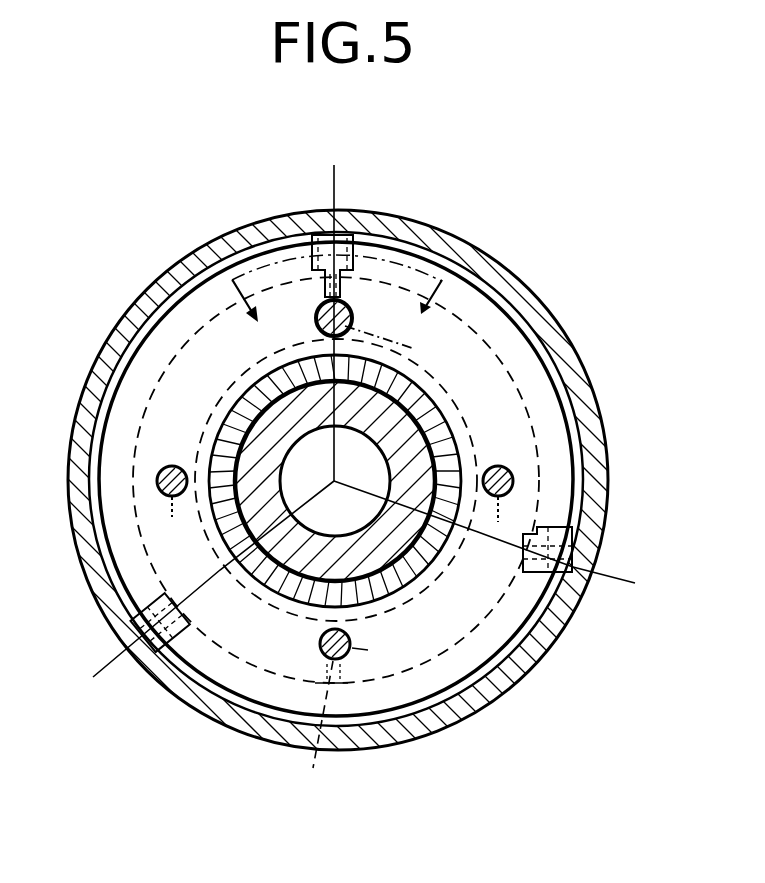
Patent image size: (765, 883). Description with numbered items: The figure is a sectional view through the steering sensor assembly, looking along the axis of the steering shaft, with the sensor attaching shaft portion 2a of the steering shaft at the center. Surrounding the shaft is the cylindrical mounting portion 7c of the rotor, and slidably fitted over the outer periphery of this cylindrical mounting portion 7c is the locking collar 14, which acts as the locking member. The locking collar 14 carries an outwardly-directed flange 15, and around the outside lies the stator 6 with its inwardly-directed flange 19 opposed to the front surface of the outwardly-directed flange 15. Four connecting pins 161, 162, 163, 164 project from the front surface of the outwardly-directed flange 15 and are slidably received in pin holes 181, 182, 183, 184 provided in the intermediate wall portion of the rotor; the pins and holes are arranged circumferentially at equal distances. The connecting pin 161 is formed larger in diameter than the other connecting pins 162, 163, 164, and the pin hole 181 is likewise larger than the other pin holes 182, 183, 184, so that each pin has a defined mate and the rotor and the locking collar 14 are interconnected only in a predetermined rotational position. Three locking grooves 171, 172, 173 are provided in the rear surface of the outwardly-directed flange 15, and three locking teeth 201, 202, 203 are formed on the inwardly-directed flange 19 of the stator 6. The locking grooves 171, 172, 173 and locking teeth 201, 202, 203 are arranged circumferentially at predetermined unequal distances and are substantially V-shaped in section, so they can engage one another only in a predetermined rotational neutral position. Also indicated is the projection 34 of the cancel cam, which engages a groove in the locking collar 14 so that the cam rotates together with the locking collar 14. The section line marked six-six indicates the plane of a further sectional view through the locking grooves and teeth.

The locking collar 14 is at (455, 667).
The inwardly-directed flange 19 is at (128, 327).
The outwardly-directed flange 15 is at (530, 360).
The cylindrical mounting portion 7c is at (423, 563).
The sensor attaching shaft portion 2a is at (403, 425).
The stator 6 is at (489, 241).
The connecting pin 161 is at (315, 320).
The connecting pin 162 is at (172, 464).
The connecting pin 163 is at (318, 648).
The connecting pin 164 is at (500, 464).
The pin hole 181 is at (404, 354).
The pin hole 182 is at (174, 527).
The pin hole 183 is at (387, 648).
The pin hole 184 is at (509, 532).
The locking tooth 201 is at (322, 238).
The locking tooth 202 is at (122, 622).
The locking tooth 203 is at (586, 530).
The locking groove 171 is at (343, 236).
The locking groove 172 is at (213, 606).
The locking groove 173 is at (484, 566).
The projection 34 is at (352, 546).